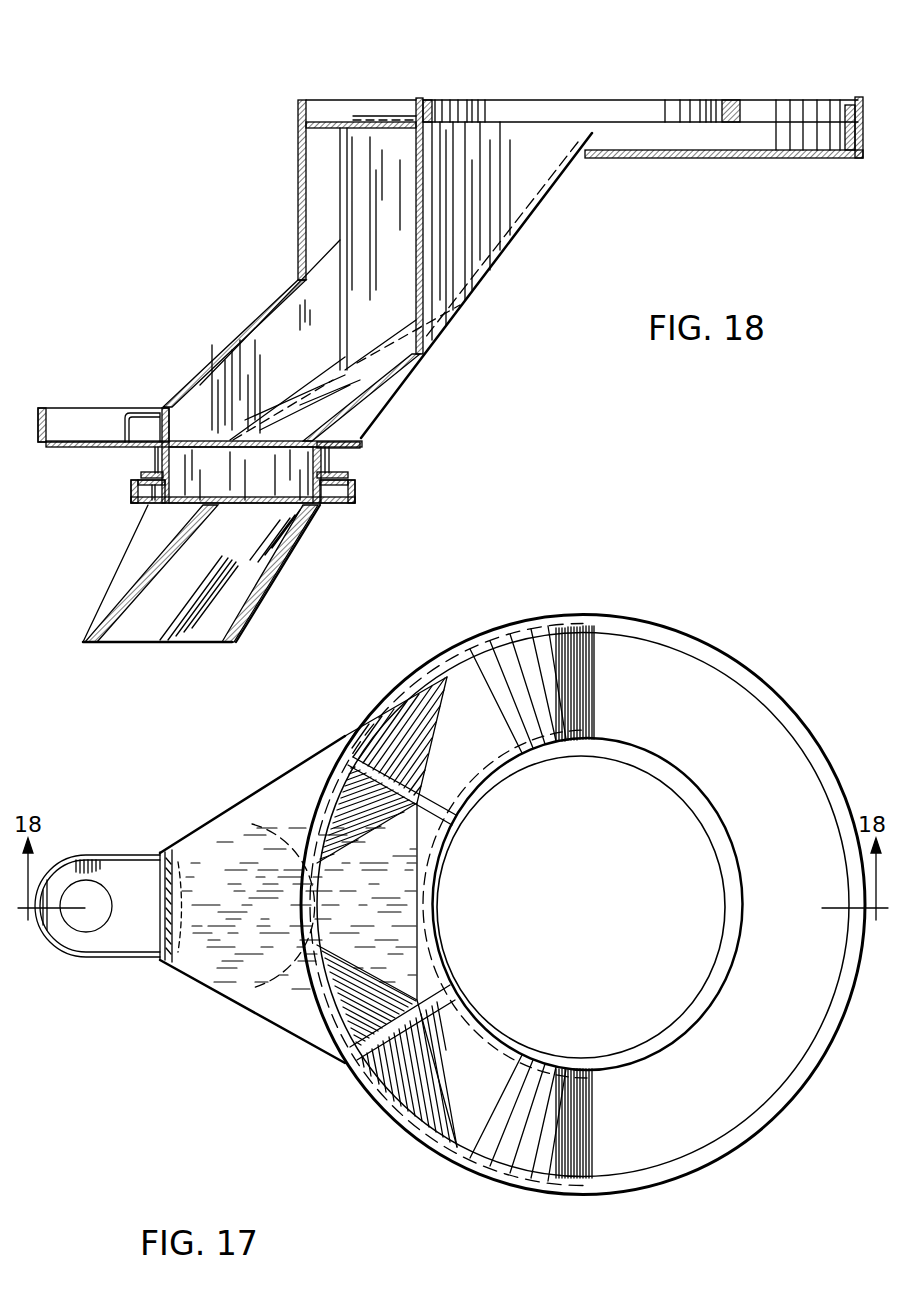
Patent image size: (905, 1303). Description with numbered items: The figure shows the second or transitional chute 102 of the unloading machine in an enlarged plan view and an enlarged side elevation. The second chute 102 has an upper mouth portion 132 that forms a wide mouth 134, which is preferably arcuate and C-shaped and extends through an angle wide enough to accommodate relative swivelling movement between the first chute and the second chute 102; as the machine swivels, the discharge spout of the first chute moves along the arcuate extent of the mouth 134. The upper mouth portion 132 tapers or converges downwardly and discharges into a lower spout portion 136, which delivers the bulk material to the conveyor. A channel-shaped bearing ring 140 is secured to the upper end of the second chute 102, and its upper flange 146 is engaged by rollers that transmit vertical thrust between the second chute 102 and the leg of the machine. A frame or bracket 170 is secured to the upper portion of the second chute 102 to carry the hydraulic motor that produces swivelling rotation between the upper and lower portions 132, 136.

In FIG. 18, the second chute 102 is at (542, 233).
In FIG. 17, the second chute 102 is at (632, 655).
In FIG. 18, the upper mouth portion 132 is at (556, 190).
In FIG. 17, the upper mouth portion 132 is at (596, 696).
In FIG. 17, the mouth 134 is at (574, 658).
In FIG. 18, the lower spout portion 136 is at (297, 557).
In FIG. 18, the bearing ring 140 is at (436, 103).
In FIG. 17, the bearing ring 140 is at (745, 905).
In FIG. 18, the upper flange 146 is at (428, 98).
In FIG. 17, the upper flange 146 is at (690, 790).
In FIG. 18, the bracket 170 is at (70, 405).
In FIG. 17, the bracket 170 is at (87, 855).